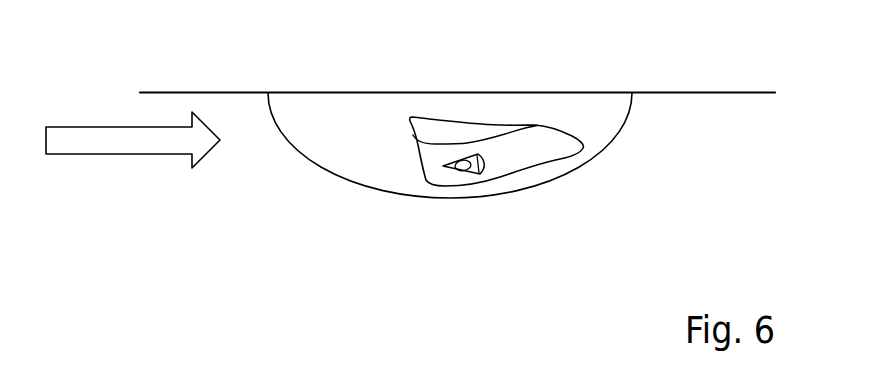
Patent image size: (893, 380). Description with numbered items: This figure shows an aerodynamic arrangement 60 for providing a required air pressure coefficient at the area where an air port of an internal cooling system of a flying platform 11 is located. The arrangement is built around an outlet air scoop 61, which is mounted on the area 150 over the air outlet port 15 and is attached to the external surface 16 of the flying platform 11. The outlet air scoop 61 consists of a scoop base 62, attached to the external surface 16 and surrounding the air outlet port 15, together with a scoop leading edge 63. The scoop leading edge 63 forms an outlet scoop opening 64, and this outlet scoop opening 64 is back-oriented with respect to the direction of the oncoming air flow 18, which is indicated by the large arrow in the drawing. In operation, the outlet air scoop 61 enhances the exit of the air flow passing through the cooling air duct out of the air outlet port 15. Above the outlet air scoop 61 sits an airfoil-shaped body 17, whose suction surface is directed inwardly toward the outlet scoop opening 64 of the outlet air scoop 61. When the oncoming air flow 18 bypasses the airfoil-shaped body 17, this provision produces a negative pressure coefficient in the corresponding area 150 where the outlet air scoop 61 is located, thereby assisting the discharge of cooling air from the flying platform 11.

The flying platform 11 is at (333, 178).
The air outlet port 15 is at (466, 152).
The external surface 16 is at (597, 124).
The airfoil-shaped body 17 is at (432, 117).
The oncoming air flow 18 is at (120, 156).
The aerodynamic arrangement 60 is at (269, 269).
The outlet air scoop 61 is at (481, 186).
The scoop base 62 is at (445, 167).
The scoop leading edge 63 is at (471, 173).
The outlet scoop opening 64 is at (487, 163).
The area 150 is at (540, 156).